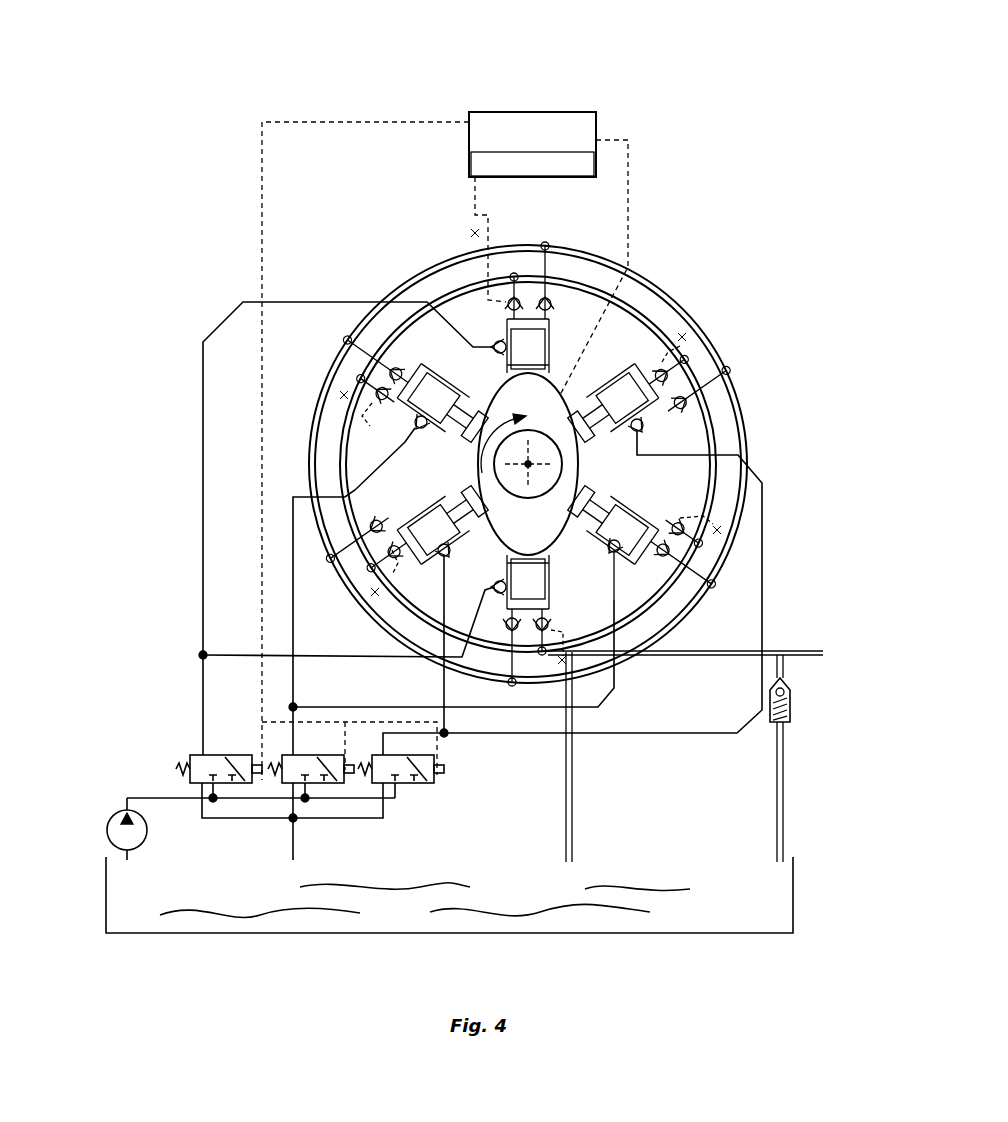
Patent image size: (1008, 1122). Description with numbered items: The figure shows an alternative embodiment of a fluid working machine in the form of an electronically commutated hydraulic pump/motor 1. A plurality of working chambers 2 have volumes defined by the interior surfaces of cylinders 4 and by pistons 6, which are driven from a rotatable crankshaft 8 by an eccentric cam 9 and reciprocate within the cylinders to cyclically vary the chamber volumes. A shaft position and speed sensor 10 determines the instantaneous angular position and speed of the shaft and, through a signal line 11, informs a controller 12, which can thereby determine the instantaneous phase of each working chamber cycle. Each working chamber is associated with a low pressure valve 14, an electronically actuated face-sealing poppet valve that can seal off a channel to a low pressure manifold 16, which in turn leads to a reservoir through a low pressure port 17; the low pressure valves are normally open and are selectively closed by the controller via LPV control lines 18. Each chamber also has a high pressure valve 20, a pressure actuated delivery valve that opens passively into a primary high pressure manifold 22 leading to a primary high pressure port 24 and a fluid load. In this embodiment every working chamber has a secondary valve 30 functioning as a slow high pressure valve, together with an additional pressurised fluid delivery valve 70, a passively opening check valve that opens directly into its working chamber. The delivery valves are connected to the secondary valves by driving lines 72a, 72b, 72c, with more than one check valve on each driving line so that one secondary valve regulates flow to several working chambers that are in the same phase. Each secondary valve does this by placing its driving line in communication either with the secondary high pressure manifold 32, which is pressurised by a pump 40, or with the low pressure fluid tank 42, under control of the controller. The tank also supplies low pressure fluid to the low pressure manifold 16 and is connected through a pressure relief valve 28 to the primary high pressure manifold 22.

The electronically commutated hydraulic pump/motor 1 is at (218, 58).
The working chamber 2 is at (494, 464).
The cylinder 4 is at (494, 460).
The piston 6 is at (330, 505).
The rotatable crankshaft 8 is at (519, 462).
The eccentric cam 9 is at (395, 373).
The shaft position and speed sensor 10 is at (600, 368).
The signal line 11 is at (628, 198).
The controller 12 is at (541, 144).
The low pressure valve 14 is at (467, 193).
The low pressure manifold 16 is at (716, 434).
The low pressure port 17 is at (574, 805).
The LPV control line 18 is at (514, 296).
The high pressure valve 20 is at (376, 359).
The primary high pressure manifold 22 is at (746, 383).
The primary high pressure port 24 is at (803, 655).
The pressure relief valve 28 is at (790, 718).
The secondary valve 30 is at (205, 754).
The secondary high pressure manifold 32 is at (152, 798).
The pump 40 is at (108, 820).
The low pressure fluid tank 42 is at (150, 926).
The pressurised fluid delivery valve 70 is at (620, 556).
The driving line 72a is at (203, 580).
The driving line 72b is at (293, 626).
The driving line 72c is at (483, 735).